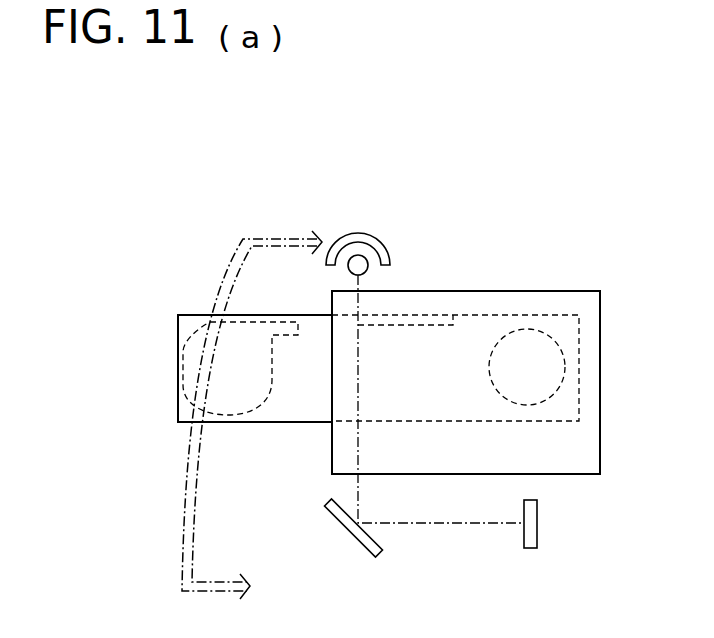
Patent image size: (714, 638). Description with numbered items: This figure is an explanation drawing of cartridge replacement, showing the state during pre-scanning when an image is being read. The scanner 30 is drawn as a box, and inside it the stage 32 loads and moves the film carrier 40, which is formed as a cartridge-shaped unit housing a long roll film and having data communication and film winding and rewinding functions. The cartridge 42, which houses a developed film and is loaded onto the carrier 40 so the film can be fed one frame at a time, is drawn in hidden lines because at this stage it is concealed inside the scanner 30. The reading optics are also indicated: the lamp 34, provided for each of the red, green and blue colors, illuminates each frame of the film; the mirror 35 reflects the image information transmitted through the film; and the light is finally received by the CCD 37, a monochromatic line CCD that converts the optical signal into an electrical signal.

The scanner 30 is at (232, 232).
The stage 32 is at (484, 290).
The lamp 34 is at (360, 232).
The mirror 35 is at (347, 525).
The CCD 37 is at (539, 510).
The film carrier 40 is at (543, 315).
The cartridge 42 is at (212, 317).